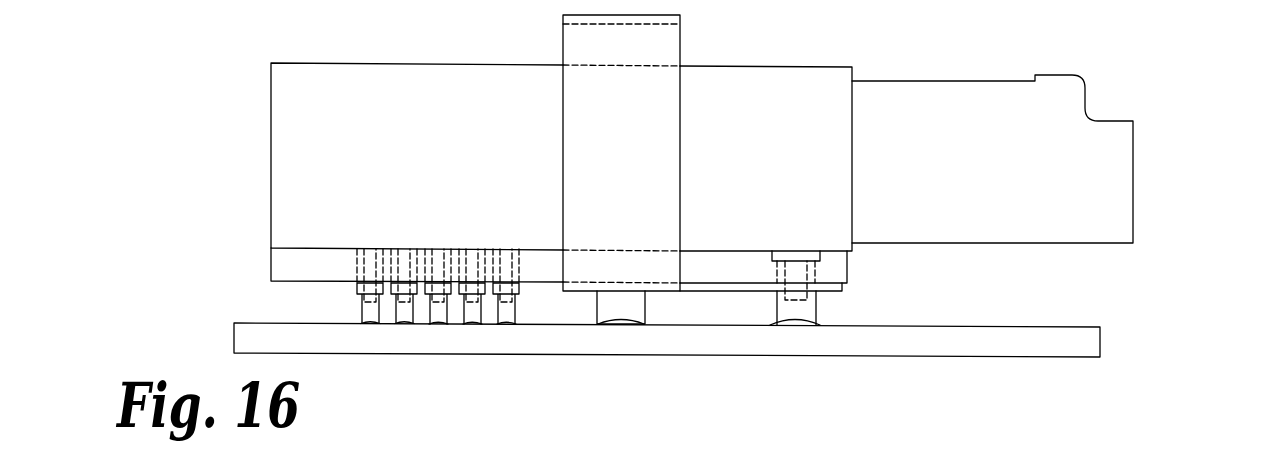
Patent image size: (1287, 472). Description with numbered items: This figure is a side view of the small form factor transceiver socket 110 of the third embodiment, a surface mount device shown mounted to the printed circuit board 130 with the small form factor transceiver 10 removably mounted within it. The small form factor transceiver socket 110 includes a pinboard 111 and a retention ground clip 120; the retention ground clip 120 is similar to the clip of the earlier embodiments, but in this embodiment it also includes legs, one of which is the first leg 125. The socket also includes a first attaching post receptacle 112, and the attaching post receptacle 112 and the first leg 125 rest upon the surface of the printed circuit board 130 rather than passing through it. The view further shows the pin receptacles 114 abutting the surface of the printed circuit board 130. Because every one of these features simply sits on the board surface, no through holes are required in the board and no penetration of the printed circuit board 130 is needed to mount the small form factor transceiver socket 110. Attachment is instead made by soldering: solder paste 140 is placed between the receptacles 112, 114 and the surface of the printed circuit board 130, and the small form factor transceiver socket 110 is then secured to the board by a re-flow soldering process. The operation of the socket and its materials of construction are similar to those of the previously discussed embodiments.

The small form factor transceiver 10 is at (1085, 105).
The small form factor transceiver socket 110 is at (847, 268).
The pinboard 111 is at (271, 270).
The first attaching post receptacle 112 is at (817, 315).
The pin receptacles 114 is at (360, 312).
The retention ground clip 120 is at (680, 35).
The first leg 125 is at (597, 307).
The printed circuit board 130 is at (958, 357).
The solder paste 140 is at (370, 323).